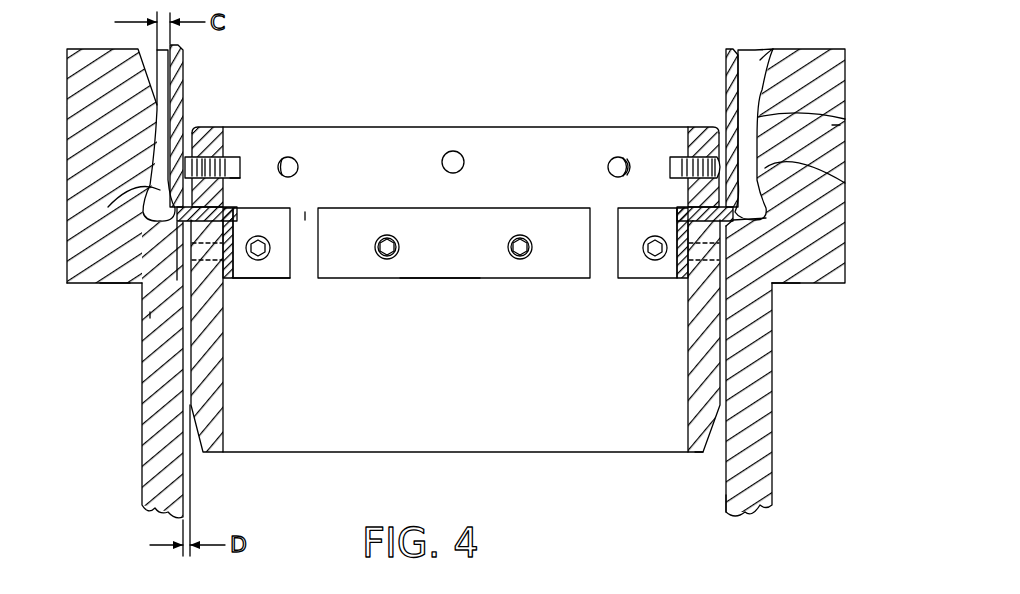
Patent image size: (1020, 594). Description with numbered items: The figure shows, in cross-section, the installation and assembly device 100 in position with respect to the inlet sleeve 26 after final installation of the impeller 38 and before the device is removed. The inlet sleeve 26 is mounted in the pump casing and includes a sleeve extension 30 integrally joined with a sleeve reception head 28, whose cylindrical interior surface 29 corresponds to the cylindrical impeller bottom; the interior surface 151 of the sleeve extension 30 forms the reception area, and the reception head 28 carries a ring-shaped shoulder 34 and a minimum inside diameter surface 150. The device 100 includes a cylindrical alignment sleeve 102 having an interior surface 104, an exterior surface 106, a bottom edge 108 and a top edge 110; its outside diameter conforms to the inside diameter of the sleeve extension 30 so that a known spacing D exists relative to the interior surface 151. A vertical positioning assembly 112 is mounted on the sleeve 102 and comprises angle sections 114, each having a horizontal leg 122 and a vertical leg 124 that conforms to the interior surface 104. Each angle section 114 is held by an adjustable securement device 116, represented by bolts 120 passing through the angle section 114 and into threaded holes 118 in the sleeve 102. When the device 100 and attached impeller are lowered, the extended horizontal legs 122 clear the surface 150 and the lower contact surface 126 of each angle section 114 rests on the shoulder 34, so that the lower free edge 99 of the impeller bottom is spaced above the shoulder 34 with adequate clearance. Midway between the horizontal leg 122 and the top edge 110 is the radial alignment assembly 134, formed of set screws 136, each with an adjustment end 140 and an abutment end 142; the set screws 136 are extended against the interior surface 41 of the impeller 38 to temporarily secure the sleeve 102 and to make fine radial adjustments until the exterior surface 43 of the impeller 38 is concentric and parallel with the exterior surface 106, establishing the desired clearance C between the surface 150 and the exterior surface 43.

The inlet sleeve 26 is at (67, 117).
The sleeve reception head 28 is at (845, 92).
The cylindrical interior surface 29 is at (762, 65).
The sleeve extension 30 is at (772, 433).
The ring-shaped shoulder 34 is at (112, 285).
The impeller 38 is at (745, 47).
The interior surface of impeller 41 is at (725, 45).
The exterior surface of impeller 43 is at (163, 122).
The lower free edge 99 is at (150, 212).
The installation and assembly device 100 is at (227, 430).
The alignment sleeve 102 is at (641, 455).
The interior surface 104 is at (530, 420).
The exterior surface 106 is at (715, 333).
The bottom edge 108 is at (700, 455).
The top edge 110 is at (302, 127).
The vertical positioning assembly 112 is at (283, 292).
The angle section 114 is at (231, 285).
The adjustable securement device 116 is at (526, 228).
The threaded holes 118 is at (765, 283).
The bolts 120 is at (505, 238).
The horizontal leg 122 is at (305, 212).
The vertical leg 124 is at (148, 365).
The lower contact surface 126 is at (150, 312).
The radial alignment assembly 134 is at (236, 150).
The set screws 136 is at (232, 178).
The adjustment end 140 is at (242, 170).
The abutment end 142 is at (202, 132).
The minimum inside diameter surface 150 is at (832, 125).
The interior surface of sleeve extension 151 is at (725, 497).